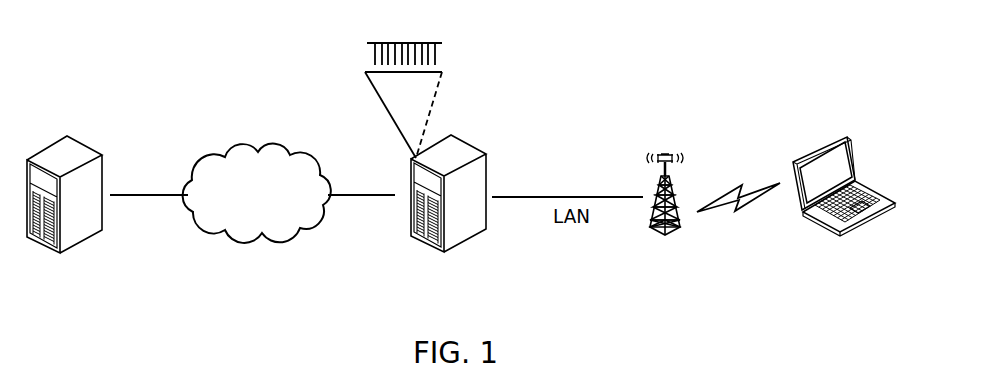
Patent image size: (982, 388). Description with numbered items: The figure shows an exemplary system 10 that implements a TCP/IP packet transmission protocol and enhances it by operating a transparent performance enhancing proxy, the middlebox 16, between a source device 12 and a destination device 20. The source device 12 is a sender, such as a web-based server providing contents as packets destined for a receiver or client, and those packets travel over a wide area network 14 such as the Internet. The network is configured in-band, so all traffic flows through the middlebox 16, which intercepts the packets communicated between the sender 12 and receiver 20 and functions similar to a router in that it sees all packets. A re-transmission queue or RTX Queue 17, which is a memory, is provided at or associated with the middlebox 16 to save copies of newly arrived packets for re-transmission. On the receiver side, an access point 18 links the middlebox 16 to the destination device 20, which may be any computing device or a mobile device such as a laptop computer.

The system 10 is at (163, 78).
The source device 12 is at (46, 149).
The wide area network 14 is at (254, 148).
The middlebox 16 is at (473, 146).
The re-transmission queue 17 is at (437, 62).
The access point 18 is at (665, 152).
The destination device 20 is at (825, 146).